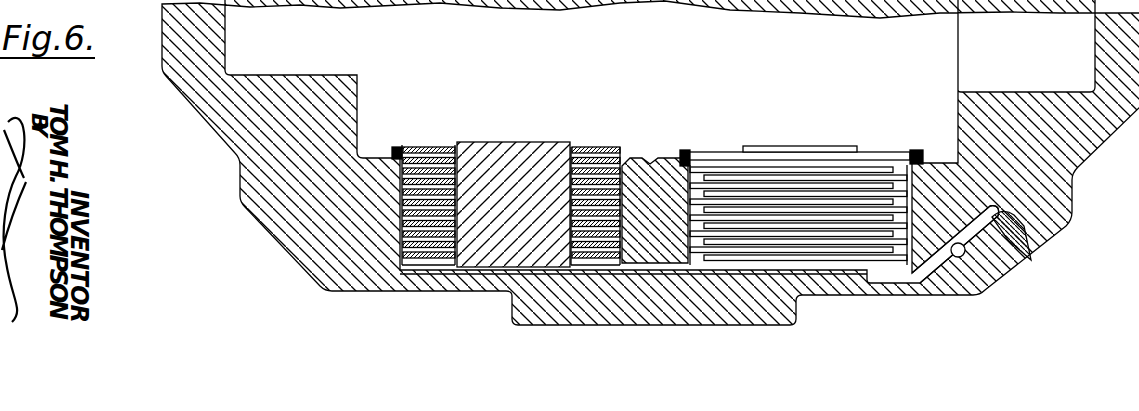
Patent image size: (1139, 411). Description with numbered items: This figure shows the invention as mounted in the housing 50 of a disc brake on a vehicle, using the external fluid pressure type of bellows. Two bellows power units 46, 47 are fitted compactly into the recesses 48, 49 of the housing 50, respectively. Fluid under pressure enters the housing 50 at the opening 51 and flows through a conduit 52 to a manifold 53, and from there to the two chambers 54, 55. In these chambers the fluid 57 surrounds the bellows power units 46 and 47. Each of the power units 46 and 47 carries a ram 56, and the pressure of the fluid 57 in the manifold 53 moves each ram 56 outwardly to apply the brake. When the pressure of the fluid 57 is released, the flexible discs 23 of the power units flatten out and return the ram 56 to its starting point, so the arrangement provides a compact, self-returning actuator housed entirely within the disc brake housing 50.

The flexible discs 23 is at (624, 178).
The power unit 46 is at (813, 272).
The power unit 47 is at (427, 265).
The recess 48 is at (398, 150).
The recess 49 is at (695, 165).
The housing 50 is at (1040, 217).
The opening 51 is at (1024, 250).
The conduit 52 is at (925, 283).
The manifold 53 is at (670, 272).
The chamber 54 is at (505, 272).
The chamber 55 is at (743, 272).
The ram 56 is at (500, 142).
The fluid 57 is at (640, 272).